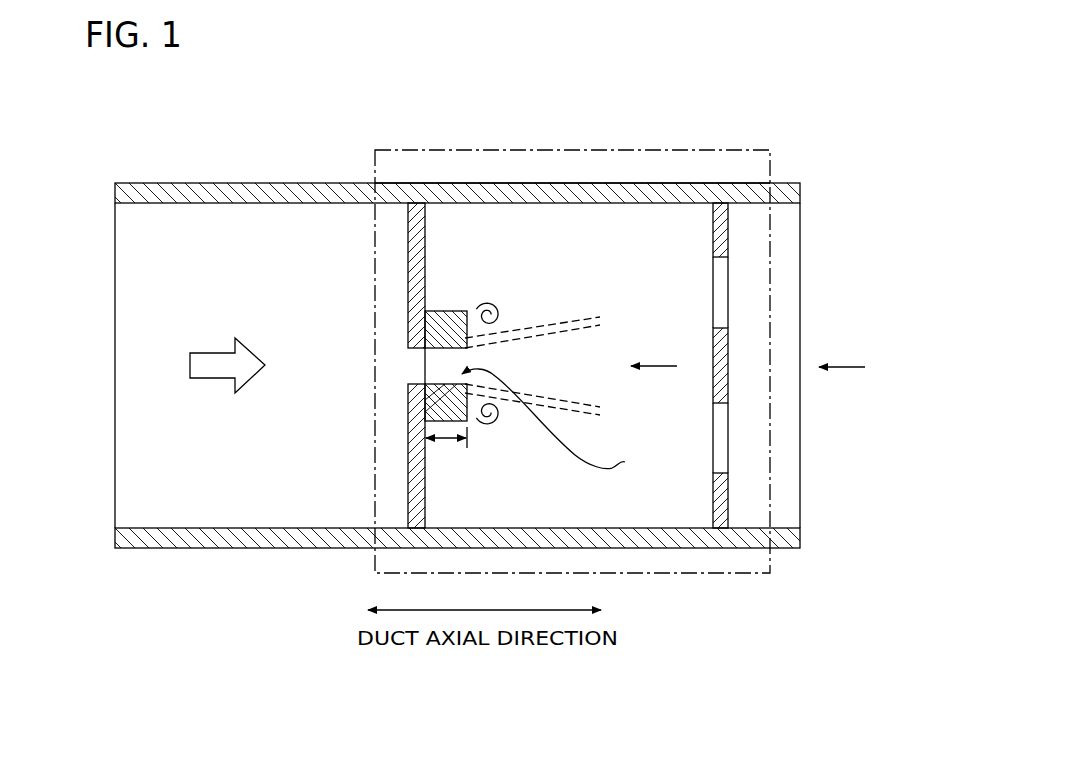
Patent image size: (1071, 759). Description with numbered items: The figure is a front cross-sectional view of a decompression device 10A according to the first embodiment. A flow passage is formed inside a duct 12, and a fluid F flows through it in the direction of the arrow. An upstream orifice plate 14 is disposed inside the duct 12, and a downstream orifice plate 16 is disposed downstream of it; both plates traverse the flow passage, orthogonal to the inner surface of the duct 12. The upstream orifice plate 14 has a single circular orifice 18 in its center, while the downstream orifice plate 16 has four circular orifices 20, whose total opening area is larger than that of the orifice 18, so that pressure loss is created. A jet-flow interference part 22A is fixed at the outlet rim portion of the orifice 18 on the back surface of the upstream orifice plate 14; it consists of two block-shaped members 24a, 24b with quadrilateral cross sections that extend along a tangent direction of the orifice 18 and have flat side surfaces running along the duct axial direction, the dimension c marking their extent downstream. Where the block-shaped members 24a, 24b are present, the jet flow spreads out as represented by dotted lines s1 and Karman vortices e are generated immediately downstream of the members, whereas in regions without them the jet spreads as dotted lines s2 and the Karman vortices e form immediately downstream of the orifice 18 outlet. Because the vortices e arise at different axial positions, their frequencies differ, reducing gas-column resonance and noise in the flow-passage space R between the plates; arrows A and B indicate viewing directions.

The decompression device 10A is at (667, 180).
The duct 12 is at (295, 183).
The upstream orifice plate 14 is at (408, 237).
The downstream orifice plate 16 is at (728, 225).
The orifice 18 is at (408, 357).
The orifices 20 is at (722, 258).
The jet-flow interference part 22A is at (567, 424).
The block-shaped member 24a is at (450, 311).
The block-shaped member 24b is at (433, 407).
The flow-passage space R is at (572, 150).
The fluid F is at (212, 352).
The direction A is at (664, 365).
The direction B is at (852, 365).
The dotted lines s1 is at (573, 328).
The dotted lines s2 is at (572, 320).
The Karman vortices e is at (497, 426).
The protrusion length c is at (446, 447).